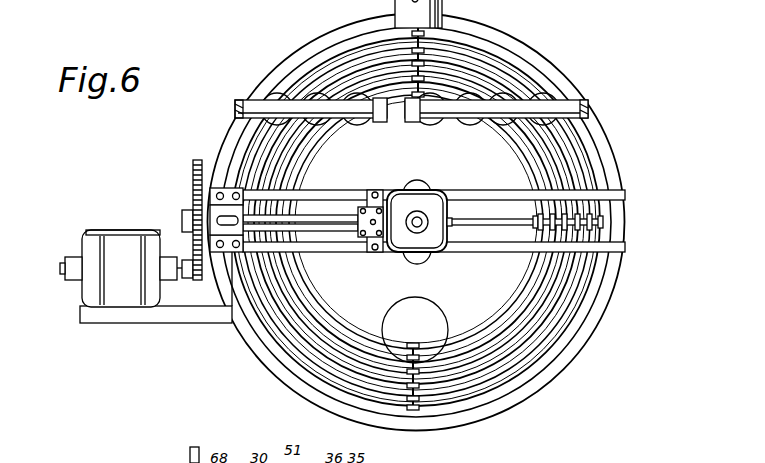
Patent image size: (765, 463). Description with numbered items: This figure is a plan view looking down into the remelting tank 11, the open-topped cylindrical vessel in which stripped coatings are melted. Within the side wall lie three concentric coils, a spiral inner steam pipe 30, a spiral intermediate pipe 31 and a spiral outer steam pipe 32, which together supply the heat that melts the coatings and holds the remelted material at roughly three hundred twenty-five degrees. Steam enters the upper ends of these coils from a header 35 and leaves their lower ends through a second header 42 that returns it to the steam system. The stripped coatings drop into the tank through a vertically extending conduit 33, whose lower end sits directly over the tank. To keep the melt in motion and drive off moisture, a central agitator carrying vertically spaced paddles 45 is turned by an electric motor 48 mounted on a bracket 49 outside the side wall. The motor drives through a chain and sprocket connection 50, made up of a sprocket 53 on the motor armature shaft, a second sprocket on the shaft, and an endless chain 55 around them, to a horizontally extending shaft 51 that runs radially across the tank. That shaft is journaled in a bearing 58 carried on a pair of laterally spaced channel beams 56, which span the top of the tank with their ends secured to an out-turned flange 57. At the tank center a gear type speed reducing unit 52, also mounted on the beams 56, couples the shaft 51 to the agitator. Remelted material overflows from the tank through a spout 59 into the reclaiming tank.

The remelting tank 11 is at (620, 160).
The spiral inner steam pipe 30 is at (540, 272).
The spiral intermediate pipe 31 is at (550, 298).
The spiral outer steam pipe 32 is at (547, 350).
The vertically extending conduit 33 is at (387, 304).
The header 35 is at (262, 106).
The header 42 is at (590, 105).
The paddles 45 is at (409, 258).
The electric motor 48 is at (121, 268).
The bracket 49 is at (180, 323).
The chain and sprocket connection 50 is at (192, 204).
The horizontally extending shaft 51 is at (313, 220).
The gear type speed reducing unit 52 is at (433, 205).
The sprocket 53 is at (194, 278).
The endless chain 55 is at (190, 240).
The channel beams 56 is at (615, 250).
The out-turned flange 57 is at (600, 300).
The bearing 58 is at (232, 187).
The spout 59 is at (447, 22).